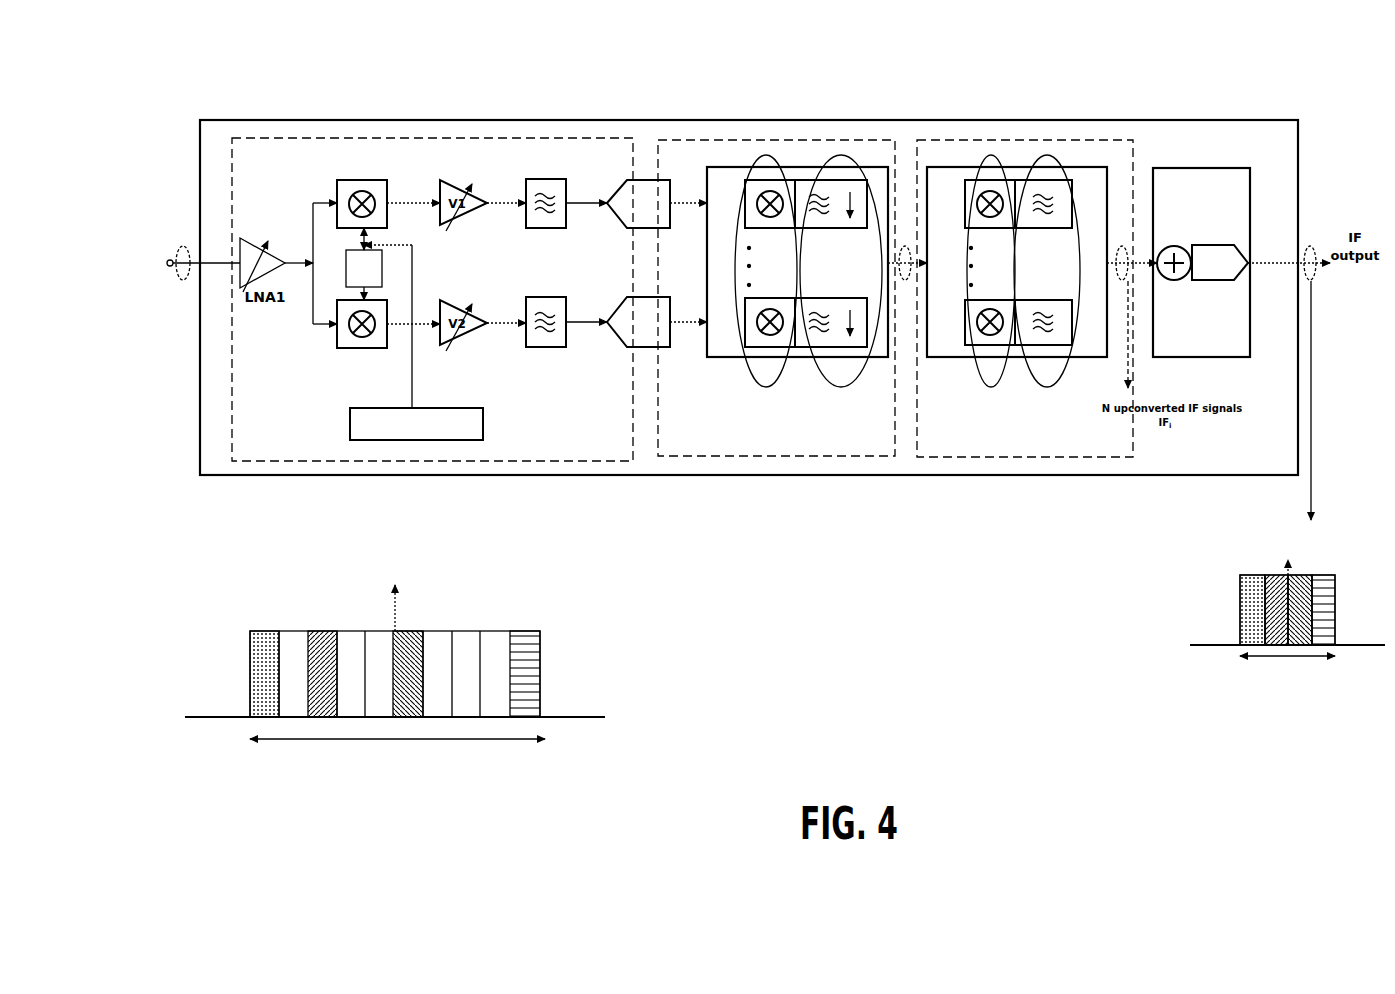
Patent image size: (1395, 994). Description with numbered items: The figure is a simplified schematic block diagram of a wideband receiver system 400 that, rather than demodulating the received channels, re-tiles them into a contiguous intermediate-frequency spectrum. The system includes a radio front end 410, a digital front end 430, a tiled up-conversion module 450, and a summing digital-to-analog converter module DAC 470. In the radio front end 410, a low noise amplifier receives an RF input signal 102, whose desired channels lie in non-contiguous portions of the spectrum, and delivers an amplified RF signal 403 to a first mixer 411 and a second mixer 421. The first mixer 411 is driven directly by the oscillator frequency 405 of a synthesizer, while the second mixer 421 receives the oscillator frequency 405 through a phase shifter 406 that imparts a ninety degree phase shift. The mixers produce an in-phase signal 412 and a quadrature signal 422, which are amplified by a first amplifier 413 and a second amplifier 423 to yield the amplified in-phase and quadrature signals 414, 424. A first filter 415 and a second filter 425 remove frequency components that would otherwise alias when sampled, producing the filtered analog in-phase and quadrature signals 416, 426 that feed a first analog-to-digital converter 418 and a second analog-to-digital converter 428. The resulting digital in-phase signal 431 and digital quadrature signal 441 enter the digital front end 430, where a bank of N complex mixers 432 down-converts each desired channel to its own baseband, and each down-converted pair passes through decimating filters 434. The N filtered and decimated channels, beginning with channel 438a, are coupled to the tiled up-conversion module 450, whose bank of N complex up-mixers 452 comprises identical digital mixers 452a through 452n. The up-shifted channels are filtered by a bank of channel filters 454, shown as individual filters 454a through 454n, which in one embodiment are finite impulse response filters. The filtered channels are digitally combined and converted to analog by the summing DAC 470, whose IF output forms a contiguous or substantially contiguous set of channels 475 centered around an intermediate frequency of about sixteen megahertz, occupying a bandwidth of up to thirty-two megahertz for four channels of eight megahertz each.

The wideband receiver system 400 is at (1006, 70).
The RF input signal 102 is at (278, 544).
The amplified RF signal 403 is at (308, 263).
The oscillator frequency 405 is at (432, 342).
The phase shifter P1 406 is at (406, 264).
The radio front end 410 is at (570, 440).
The mixer M1 411 is at (351, 190).
The in-phase signal 412 is at (413, 191).
The amplifier V1 413 is at (469, 215).
The amplified in-phase signal 414 is at (506, 191).
The filter F1 415 is at (551, 201).
The filtered analog in-phase signal 416 is at (586, 191).
The analog-to-digital converter ADC1 418 is at (638, 196).
The mixer M2 421 is at (351, 341).
The quadrature signal 422 is at (413, 312).
The amplifier V2 423 is at (469, 333).
The amplified quadrature signal 424 is at (506, 312).
The filter F2 425 is at (546, 326).
The filtered analog quadrature signal 426 is at (586, 312).
The analog-to-digital converter ADC2 428 is at (638, 313).
The digital front end 430 is at (688, 441).
The I digital signal 431 is at (690, 201).
The bank of N complex mixers 432 is at (758, 373).
The decimating filters 434 is at (825, 373).
The filtered and decimated channel 438a is at (913, 281).
The Q digital signal 441 is at (690, 321).
The tiled up-conversion module 450 is at (1060, 441).
The bank of complex up-mixers 452 is at (989, 341).
The digital mixer 452a is at (974, 204).
The digital mixer 452n is at (974, 322).
The bank of channel filters 454 is at (1046, 341).
The channel filter of UX1 454a is at (1059, 204).
The channel filter of UXN 454n is at (1059, 322).
The summing digital-to-analog converter module DAC 470 is at (1182, 205).
The contiguous set of channels 475 is at (1286, 484).